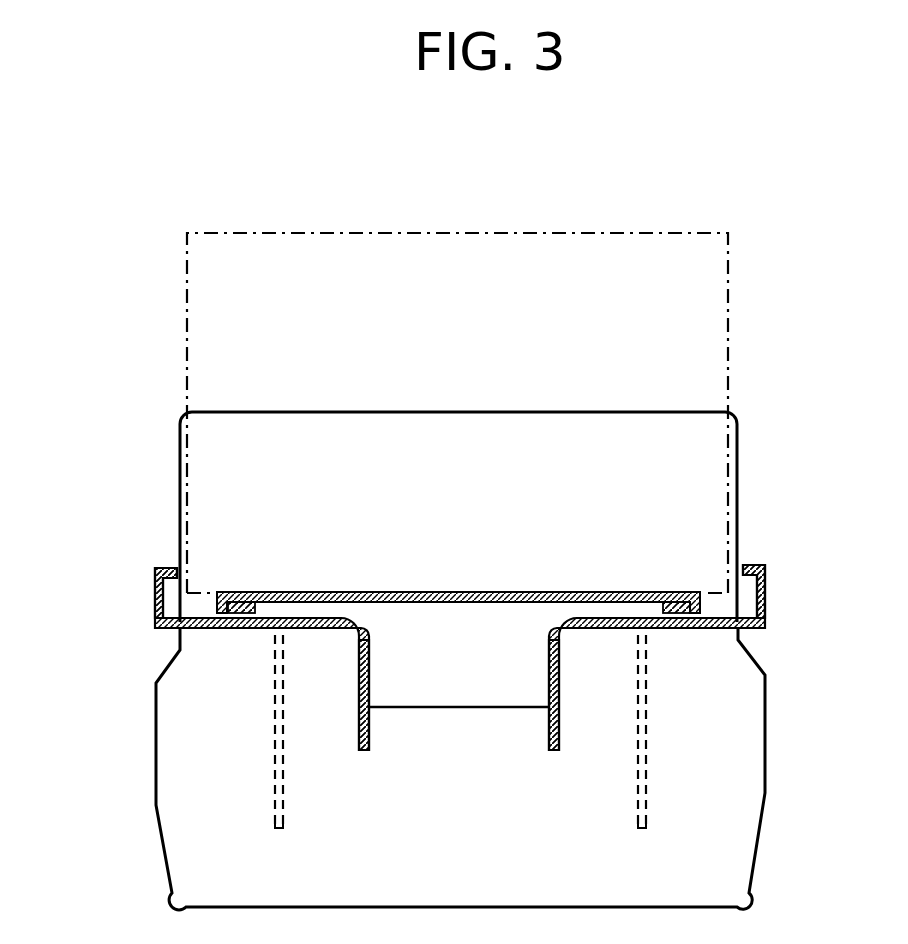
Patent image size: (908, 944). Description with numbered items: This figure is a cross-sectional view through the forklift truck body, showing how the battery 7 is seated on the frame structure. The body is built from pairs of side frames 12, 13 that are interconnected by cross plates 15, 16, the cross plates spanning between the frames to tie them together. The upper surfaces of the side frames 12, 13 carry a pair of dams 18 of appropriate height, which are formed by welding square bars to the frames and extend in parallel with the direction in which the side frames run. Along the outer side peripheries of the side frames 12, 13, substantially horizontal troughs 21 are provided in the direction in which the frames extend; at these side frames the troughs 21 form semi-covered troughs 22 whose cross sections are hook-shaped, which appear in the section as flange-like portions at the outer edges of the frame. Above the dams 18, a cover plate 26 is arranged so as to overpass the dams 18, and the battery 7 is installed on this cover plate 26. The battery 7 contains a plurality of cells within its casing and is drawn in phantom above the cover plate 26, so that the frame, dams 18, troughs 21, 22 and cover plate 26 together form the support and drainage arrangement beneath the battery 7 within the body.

The battery 7 is at (730, 290).
The side frame 12 is at (275, 707).
The side frame 13 is at (359, 730).
The cross plate 15 is at (705, 458).
The cross plate 16 is at (750, 727).
The dam 18 is at (246, 592).
The trough 21 is at (462, 657).
The semi-covered trough 22 is at (155, 598).
The cover plate 26 is at (406, 592).